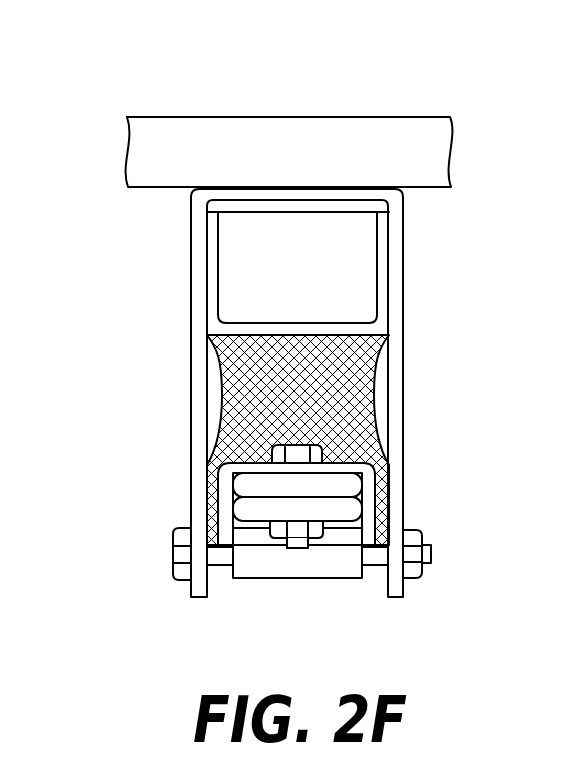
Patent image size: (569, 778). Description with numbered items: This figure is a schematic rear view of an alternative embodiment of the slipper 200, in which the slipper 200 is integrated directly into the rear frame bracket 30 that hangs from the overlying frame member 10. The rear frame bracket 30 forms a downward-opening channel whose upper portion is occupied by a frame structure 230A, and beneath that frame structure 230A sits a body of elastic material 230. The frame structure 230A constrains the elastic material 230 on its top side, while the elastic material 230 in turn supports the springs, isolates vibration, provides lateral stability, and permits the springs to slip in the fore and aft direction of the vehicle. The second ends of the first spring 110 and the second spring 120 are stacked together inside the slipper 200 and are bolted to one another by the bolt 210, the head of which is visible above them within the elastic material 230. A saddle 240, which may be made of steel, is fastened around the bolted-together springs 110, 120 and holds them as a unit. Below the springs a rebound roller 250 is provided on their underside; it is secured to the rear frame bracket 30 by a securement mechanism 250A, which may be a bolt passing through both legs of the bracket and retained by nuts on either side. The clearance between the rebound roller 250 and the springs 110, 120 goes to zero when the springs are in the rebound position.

The structural beam / support member 10 is at (357, 130).
The rear frame bracket 30 is at (397, 293).
The frame structure 230A is at (329, 322).
The elastic material 230 is at (332, 387).
The bolt 210 is at (268, 455).
The saddle 240 is at (222, 500).
The second spring 120 is at (342, 483).
The first spring 110 is at (342, 511).
The rebound roller 250 is at (299, 562).
The securement mechanism 250A is at (422, 575).
The slipper 200 is at (458, 450).